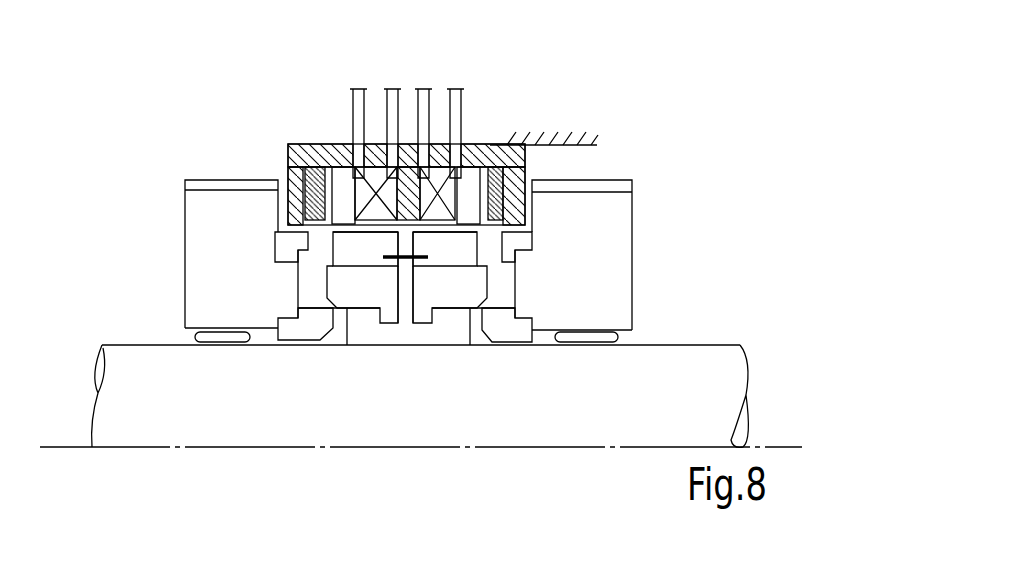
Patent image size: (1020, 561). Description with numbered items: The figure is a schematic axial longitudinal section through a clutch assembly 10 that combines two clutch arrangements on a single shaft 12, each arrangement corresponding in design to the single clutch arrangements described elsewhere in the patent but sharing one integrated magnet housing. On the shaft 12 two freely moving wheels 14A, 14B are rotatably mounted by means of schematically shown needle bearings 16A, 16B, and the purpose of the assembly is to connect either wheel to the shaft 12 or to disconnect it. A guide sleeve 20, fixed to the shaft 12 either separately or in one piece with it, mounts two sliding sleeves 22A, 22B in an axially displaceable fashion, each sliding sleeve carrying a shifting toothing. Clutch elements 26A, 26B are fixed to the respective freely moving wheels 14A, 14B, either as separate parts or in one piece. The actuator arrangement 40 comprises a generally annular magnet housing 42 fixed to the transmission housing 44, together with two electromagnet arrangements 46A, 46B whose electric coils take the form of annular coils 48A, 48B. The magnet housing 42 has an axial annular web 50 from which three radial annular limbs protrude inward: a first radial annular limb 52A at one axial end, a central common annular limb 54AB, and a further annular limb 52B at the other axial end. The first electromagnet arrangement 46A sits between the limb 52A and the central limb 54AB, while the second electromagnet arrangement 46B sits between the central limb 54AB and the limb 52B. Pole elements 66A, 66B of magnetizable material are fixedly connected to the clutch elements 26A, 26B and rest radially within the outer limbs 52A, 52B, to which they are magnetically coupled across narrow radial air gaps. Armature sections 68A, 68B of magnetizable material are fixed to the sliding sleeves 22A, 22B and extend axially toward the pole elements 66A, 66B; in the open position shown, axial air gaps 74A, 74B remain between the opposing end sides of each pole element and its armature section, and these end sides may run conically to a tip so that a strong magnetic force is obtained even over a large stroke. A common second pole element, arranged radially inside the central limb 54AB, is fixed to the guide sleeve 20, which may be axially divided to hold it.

The clutch assembly 10 is at (714, 143).
The shaft 12 is at (687, 383).
The freely moving wheel 14A is at (207, 283).
The freely moving wheel 14B is at (607, 290).
The needle bearings 16A is at (223, 333).
The needle bearings 16B is at (603, 328).
The guide sleeve 20 is at (358, 325).
The sliding sleeve 22A is at (285, 245).
The sliding sleeve 22B is at (480, 290).
The clutch element 26A is at (305, 320).
The clutch element 26B is at (505, 322).
The actuator arrangement 40 is at (597, 103).
The magnet housing 42 is at (294, 145).
The transmission housing 44 is at (590, 132).
The electromagnet arrangement 46A is at (326, 127).
The electromagnet arrangement 46B is at (506, 116).
The annular coil 48A is at (370, 143).
The annular coil 48B is at (443, 143).
The axial annular web 50 is at (316, 145).
The first radial annular limb 52A is at (290, 180).
The radial annular limb 52B is at (507, 181).
The central common annular limb 54AB is at (410, 143).
The pole element 66A is at (310, 293).
The pole element 66B is at (520, 248).
The armature section 68A is at (365, 249).
The armature section 68B is at (446, 249).
The axial air gap 74A is at (322, 240).
The axial air gap 74B is at (488, 250).